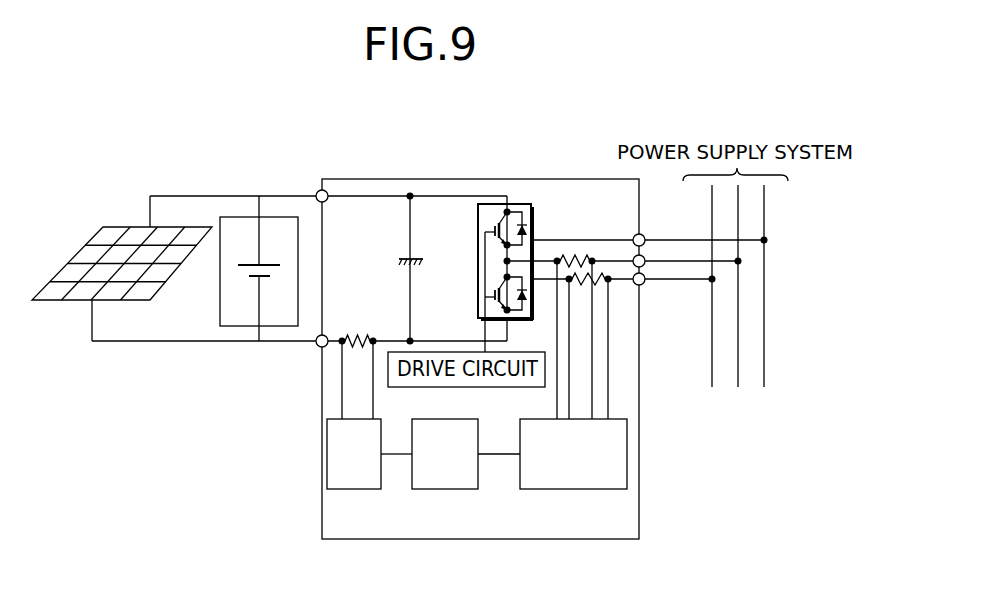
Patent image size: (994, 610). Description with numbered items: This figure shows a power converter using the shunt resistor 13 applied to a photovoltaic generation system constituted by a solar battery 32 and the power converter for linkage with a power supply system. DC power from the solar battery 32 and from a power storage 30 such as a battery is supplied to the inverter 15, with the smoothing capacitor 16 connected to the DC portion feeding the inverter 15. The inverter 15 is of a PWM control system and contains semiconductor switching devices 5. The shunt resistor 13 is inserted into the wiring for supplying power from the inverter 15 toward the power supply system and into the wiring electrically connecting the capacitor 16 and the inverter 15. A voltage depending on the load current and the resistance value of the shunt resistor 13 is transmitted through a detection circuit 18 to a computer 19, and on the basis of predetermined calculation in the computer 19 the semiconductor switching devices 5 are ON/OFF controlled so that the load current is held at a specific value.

The semiconductor switching device 5 is at (473, 236).
The shunt resistor 13 is at (563, 252).
The inverter 15 is at (476, 237).
The smoothing capacitor 16 is at (403, 258).
The detection circuit 18 is at (327, 470).
The computer 19 is at (443, 490).
The power storage 30 is at (232, 217).
The solar battery 32 is at (115, 224).